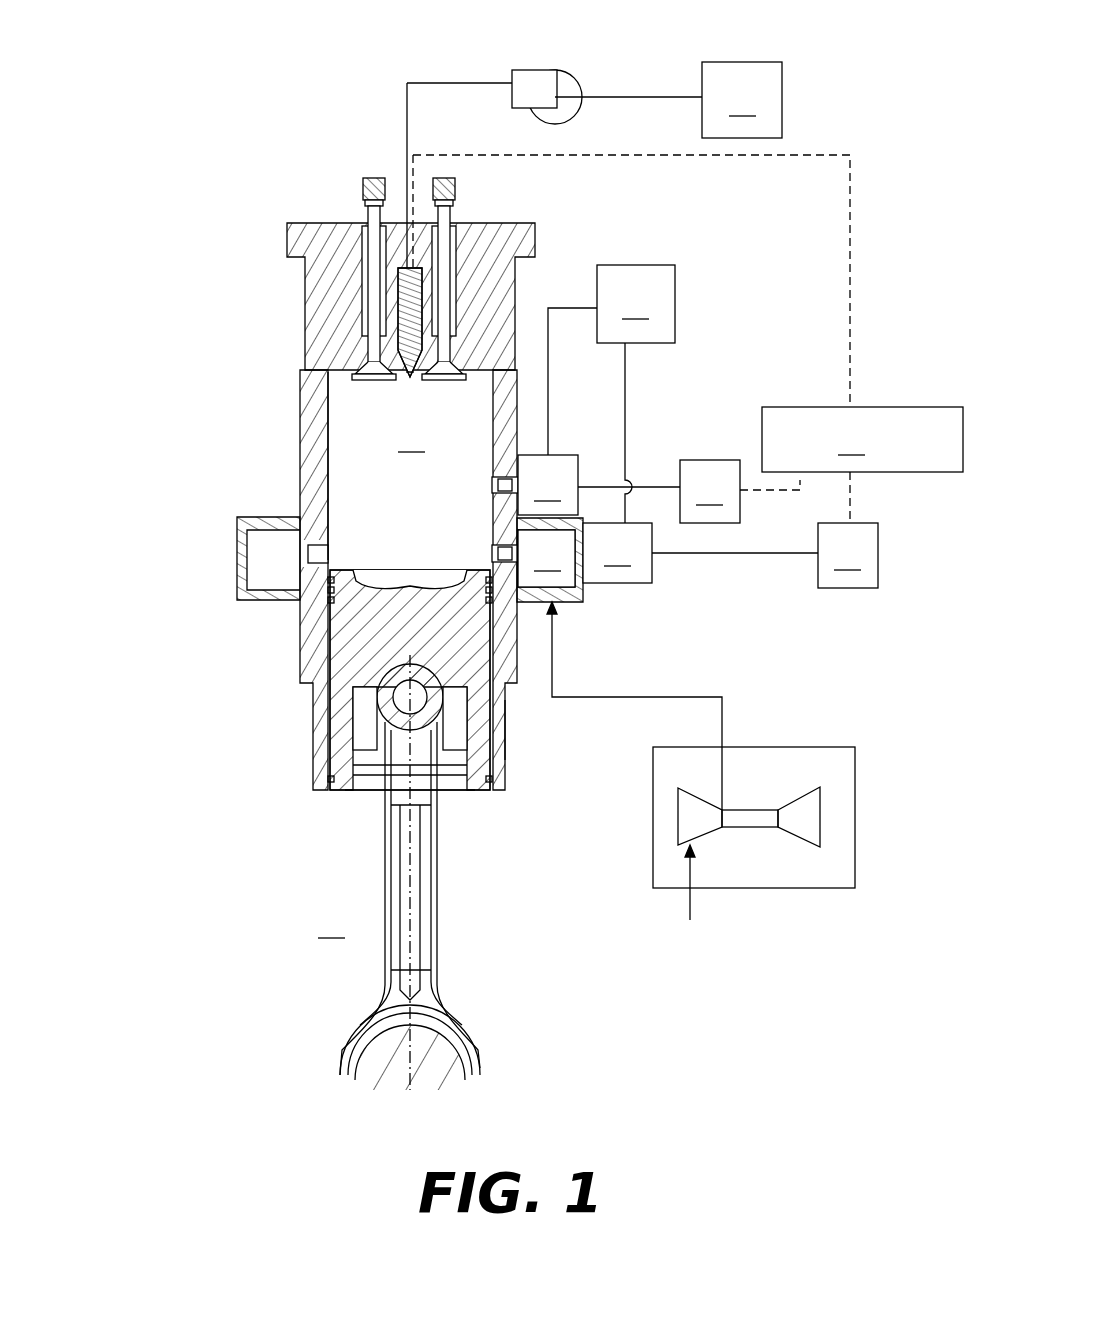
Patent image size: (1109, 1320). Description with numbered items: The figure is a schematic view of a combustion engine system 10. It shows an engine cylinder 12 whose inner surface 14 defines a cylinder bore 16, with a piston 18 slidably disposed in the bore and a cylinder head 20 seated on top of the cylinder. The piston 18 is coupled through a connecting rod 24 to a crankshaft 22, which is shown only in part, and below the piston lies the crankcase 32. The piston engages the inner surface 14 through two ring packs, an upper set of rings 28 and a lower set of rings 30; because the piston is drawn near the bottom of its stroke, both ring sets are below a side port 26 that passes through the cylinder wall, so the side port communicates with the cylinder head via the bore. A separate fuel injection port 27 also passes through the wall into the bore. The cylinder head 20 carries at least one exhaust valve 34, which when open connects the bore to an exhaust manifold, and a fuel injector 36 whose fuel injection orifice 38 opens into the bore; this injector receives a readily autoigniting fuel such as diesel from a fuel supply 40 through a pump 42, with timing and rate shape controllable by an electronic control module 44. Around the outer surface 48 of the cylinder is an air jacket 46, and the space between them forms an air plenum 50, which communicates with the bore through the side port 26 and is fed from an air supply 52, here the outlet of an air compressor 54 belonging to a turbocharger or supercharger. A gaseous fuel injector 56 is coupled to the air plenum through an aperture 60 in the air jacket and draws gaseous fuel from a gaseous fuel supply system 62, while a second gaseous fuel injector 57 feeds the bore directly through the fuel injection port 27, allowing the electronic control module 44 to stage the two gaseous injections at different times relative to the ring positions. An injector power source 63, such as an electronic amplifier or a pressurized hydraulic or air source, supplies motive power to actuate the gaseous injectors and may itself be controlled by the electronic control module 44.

The combustion engine system 10 is at (186, 240).
The engine cylinder 12 is at (300, 447).
The inner surface 14 is at (340, 413).
The cylinder bore 16 is at (413, 439).
The piston 18 is at (380, 573).
The cylinder head 20 is at (315, 222).
The crankshaft 22 is at (455, 1062).
The connecting rod 24 is at (437, 895).
The side port 26 is at (497, 556).
The fuel injection port 27 is at (497, 484).
The upper set of rings 28 is at (328, 598).
The lower set of rings 30 is at (330, 778).
The crankcase 32 is at (333, 925).
The exhaust valve 34 is at (365, 190).
The fuel injector 36 is at (400, 310).
The fuel injection orifice 38 is at (413, 377).
The fuel supply 40 is at (668, 100).
The pump 42 is at (540, 70).
The electronic control module 44 is at (688, 339).
The air jacket 46 is at (556, 604).
The outer surface 48 is at (505, 725).
The air plenum 50 is at (546, 558).
The air supply 52 is at (822, 888).
The air compressor 54 is at (705, 832).
The gaseous fuel injector 56 is at (700, 553).
The second gaseous fuel injector 57 is at (599, 485).
The aperture 60 is at (580, 565).
The gaseous fuel supply system 62 is at (611, 394).
The injector power source 63 is at (779, 524).